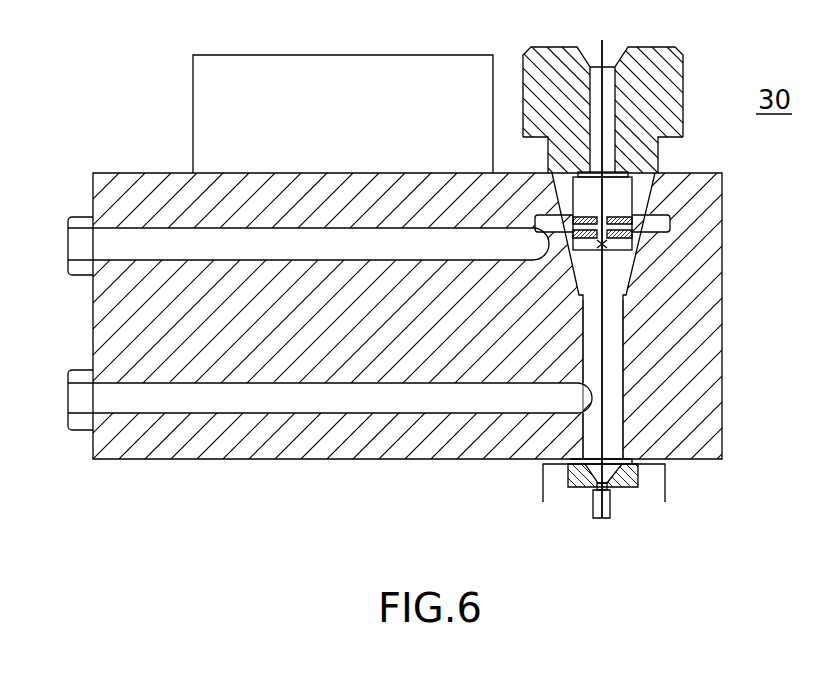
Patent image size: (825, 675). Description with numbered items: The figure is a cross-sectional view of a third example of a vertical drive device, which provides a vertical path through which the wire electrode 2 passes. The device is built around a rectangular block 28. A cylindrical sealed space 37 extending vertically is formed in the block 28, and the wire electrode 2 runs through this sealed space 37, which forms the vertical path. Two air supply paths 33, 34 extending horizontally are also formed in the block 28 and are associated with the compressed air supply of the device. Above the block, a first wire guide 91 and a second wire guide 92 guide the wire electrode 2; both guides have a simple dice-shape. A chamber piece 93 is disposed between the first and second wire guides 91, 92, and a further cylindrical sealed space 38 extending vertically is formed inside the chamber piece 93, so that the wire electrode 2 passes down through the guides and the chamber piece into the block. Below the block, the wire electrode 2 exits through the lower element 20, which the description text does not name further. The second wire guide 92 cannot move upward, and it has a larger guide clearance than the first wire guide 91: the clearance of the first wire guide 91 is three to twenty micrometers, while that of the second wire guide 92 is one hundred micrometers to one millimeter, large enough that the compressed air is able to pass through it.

The wire electrode 2 is at (604, 46).
The fiber tip / nozzle 20 is at (613, 502).
The rectangular block 28 is at (402, 438).
The air supply path 33 is at (297, 403).
The air supply path 34 is at (208, 237).
The cylindrical sealed space 37 is at (620, 400).
The cylindrical sealed space 38 is at (578, 200).
The first wire guide 91 is at (617, 245).
The second wire guide 92 is at (628, 200).
The chamber piece 93 is at (638, 238).